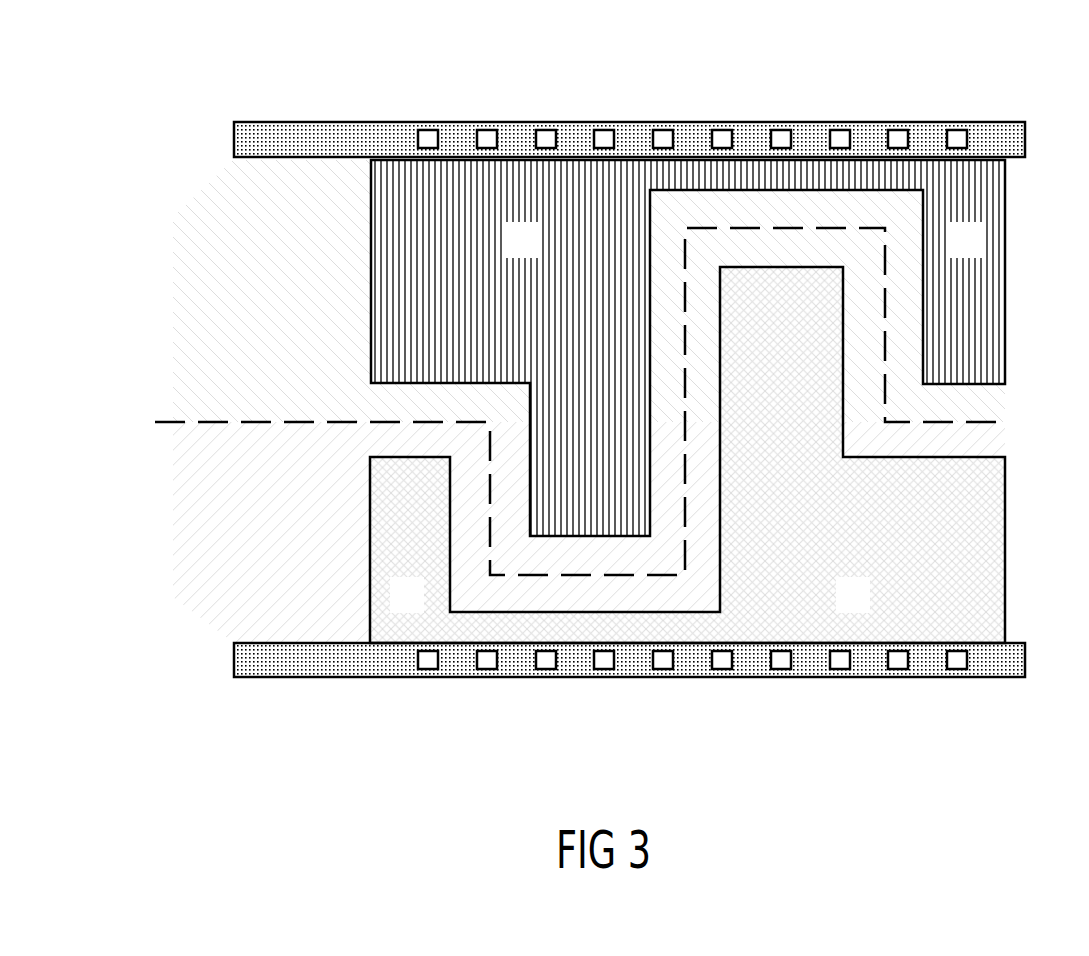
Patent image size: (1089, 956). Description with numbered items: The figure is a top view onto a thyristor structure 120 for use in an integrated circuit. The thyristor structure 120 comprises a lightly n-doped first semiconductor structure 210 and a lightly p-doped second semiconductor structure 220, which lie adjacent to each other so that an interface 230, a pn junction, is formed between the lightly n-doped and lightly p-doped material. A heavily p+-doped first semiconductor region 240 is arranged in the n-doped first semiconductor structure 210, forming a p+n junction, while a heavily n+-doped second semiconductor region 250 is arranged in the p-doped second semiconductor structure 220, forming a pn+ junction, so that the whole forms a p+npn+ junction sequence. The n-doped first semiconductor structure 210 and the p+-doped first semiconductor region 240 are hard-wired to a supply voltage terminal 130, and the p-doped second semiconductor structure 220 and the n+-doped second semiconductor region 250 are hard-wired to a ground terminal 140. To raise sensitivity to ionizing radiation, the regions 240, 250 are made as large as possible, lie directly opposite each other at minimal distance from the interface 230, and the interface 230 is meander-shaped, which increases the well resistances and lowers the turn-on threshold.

The thyristor structure 120 is at (574, 383).
The supply voltage terminal 130 is at (399, 121).
The ground terminal 140 is at (380, 677).
The lightly n-doped first semiconductor structure 210 is at (227, 303).
The lightly p-doped second semiconductor structure 220 is at (187, 488).
The interface 230 is at (1000, 420).
The heavily p+-doped first semiconductor region 240 is at (993, 280).
The heavily n+-doped second semiconductor region 250 is at (993, 585).